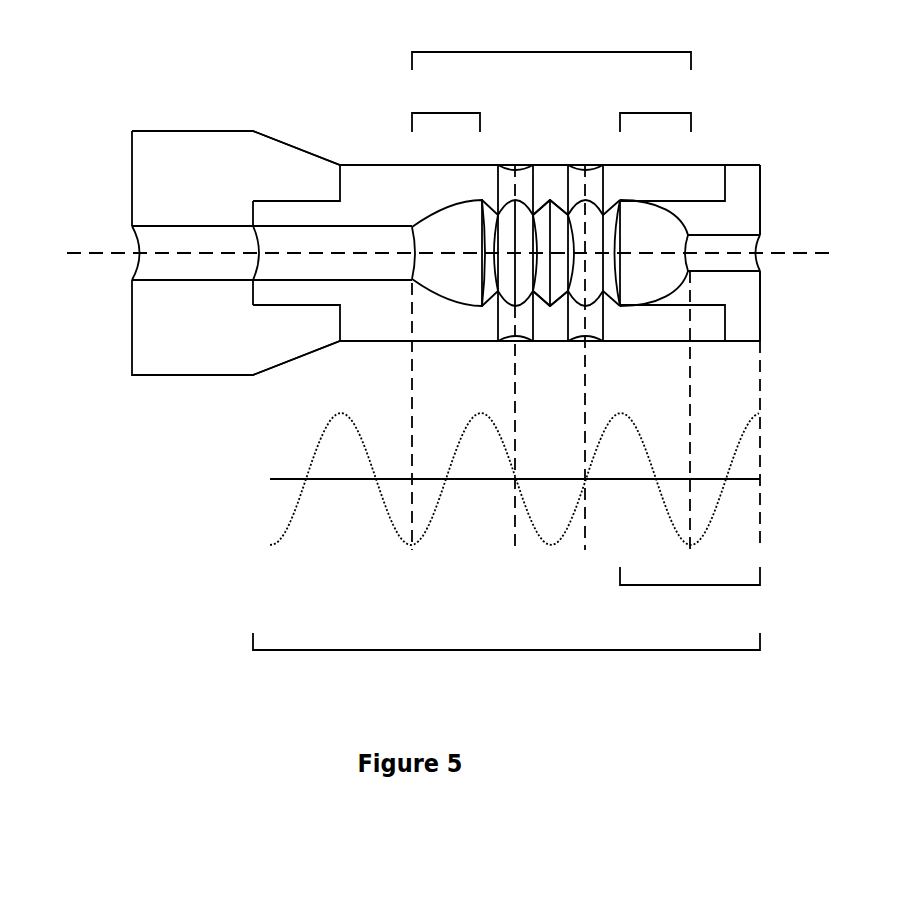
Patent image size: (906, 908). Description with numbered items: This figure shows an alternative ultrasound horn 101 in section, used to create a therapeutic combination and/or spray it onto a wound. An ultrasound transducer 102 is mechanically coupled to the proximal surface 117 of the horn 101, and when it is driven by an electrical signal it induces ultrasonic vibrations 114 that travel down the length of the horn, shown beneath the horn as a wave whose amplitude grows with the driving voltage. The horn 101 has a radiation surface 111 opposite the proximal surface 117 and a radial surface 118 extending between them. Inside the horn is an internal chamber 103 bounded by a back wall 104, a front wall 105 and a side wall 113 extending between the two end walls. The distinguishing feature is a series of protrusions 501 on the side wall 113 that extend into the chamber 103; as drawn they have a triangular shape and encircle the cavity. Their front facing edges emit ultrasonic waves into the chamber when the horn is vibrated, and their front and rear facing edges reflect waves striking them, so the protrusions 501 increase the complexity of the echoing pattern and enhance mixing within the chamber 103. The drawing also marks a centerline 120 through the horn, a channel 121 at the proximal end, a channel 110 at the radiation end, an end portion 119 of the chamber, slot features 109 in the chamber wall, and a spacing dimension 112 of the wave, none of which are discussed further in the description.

The ultrasound horn 101 is at (550, 650).
The ultrasound transducer 102 is at (198, 197).
The internal chamber 103 is at (638, 52).
The back wall 104 is at (445, 113).
The front wall 105 is at (656, 113).
The beads / teeth 109 is at (580, 166).
The outlet bore 110 is at (718, 249).
The radiation surface 111 is at (760, 190).
The pitch 112 is at (707, 585).
The side wall 113 is at (550, 303).
The ultrasonic vibrations 114 is at (317, 443).
The proximal surface 117 is at (253, 287).
The radial surface 118 is at (340, 160).
The end bulb 119 is at (640, 265).
The longitudinal axis 120 is at (92, 253).
The inlet bore 121 is at (223, 270).
The protrusion 501 is at (500, 298).